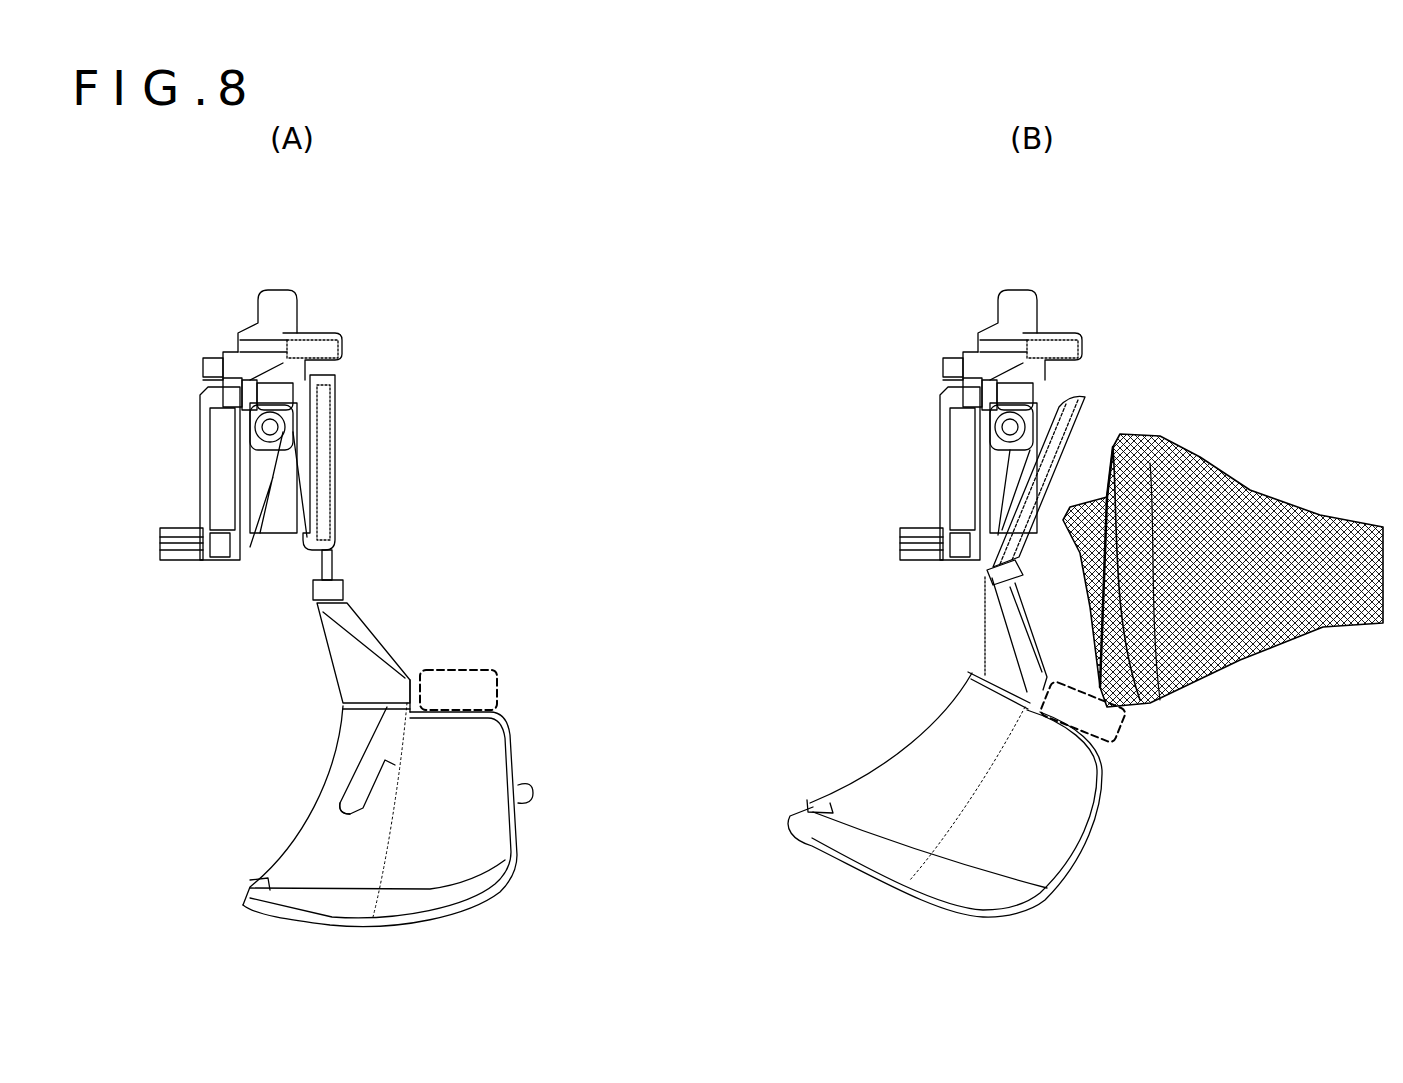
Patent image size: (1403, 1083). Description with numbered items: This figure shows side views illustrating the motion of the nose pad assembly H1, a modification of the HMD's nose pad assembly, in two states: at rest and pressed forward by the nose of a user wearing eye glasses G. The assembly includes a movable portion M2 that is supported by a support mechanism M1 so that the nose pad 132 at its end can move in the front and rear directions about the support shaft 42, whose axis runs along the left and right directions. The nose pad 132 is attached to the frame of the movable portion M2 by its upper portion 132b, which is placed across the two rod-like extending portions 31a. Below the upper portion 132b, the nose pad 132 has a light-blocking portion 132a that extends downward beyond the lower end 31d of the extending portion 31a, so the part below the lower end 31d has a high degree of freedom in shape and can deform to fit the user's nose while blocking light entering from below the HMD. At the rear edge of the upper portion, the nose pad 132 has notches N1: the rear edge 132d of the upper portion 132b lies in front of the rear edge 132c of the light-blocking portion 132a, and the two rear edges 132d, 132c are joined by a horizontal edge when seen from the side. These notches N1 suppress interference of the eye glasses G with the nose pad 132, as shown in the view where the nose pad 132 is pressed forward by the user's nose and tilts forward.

The nose pad assembly H1 is at (333, 298).
The support mechanism M1 is at (323, 397).
The movable portion M2 is at (208, 442).
The support shaft 42 is at (287, 430).
The nose pad 132 is at (632, 625).
The light-blocking portion 132a is at (432, 928).
The upper portion 132b is at (352, 580).
The rear edge of the light-blocking portion 132c is at (520, 790).
The rear edge of the upper portion 132d is at (411, 680).
The notch N1 is at (460, 672).
The extending portion 31a is at (352, 770).
The lower end 31d is at (340, 811).
The eye glasses G is at (1260, 490).